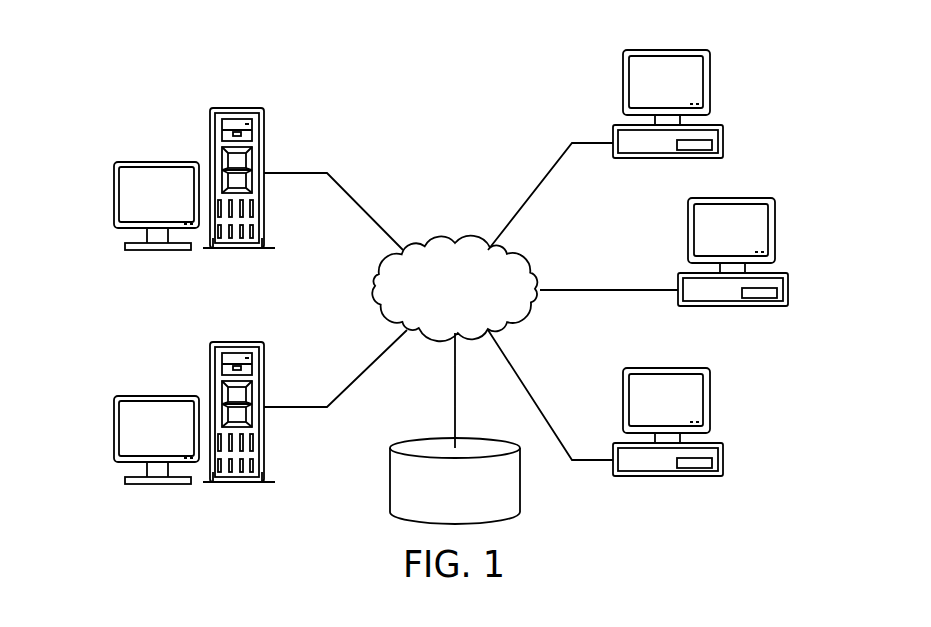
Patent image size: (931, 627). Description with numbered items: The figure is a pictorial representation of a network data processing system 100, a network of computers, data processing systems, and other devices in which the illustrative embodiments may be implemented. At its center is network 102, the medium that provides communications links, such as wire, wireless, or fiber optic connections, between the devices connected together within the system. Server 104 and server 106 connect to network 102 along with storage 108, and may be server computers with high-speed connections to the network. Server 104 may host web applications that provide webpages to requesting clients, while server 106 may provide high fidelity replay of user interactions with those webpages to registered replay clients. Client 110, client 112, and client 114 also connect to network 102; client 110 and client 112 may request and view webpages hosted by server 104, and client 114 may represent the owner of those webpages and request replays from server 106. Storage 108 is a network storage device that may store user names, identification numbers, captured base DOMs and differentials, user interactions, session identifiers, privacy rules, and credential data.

The network data processing system 100 is at (333, 89).
The network 102 is at (430, 243).
The server 104 is at (113, 428).
The server 106 is at (113, 195).
The storage 108 is at (390, 480).
The client 110 is at (723, 135).
The client 112 is at (785, 296).
The client 114 is at (723, 466).